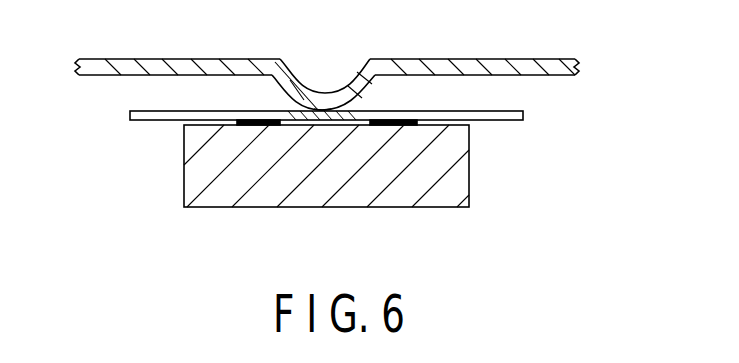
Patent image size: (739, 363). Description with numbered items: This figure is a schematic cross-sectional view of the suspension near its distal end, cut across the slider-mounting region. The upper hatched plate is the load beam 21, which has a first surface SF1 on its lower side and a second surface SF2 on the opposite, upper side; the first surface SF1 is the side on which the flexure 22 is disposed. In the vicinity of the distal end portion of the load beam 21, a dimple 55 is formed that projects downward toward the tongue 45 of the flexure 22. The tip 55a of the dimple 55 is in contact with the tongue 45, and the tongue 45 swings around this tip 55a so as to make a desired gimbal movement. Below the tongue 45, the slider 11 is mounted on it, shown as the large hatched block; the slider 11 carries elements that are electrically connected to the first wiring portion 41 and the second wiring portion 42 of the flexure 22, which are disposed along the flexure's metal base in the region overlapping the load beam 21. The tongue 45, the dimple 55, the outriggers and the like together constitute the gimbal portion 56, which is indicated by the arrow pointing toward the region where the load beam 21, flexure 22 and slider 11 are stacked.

The slider 11 is at (252, 196).
The load beam 21 is at (331, 132).
The flexure 22 is at (315, 132).
The first wiring portion 41 is at (268, 120).
The second wiring portion 42 is at (407, 111).
The tongue 45 is at (304, 83).
The dimple 55 is at (323, 136).
The tip of the dimple 55a is at (327, 113).
The gimbal portion 56 is at (342, 136).
The first surface SF1 is at (545, 77).
The second surface SF2 is at (553, 58).